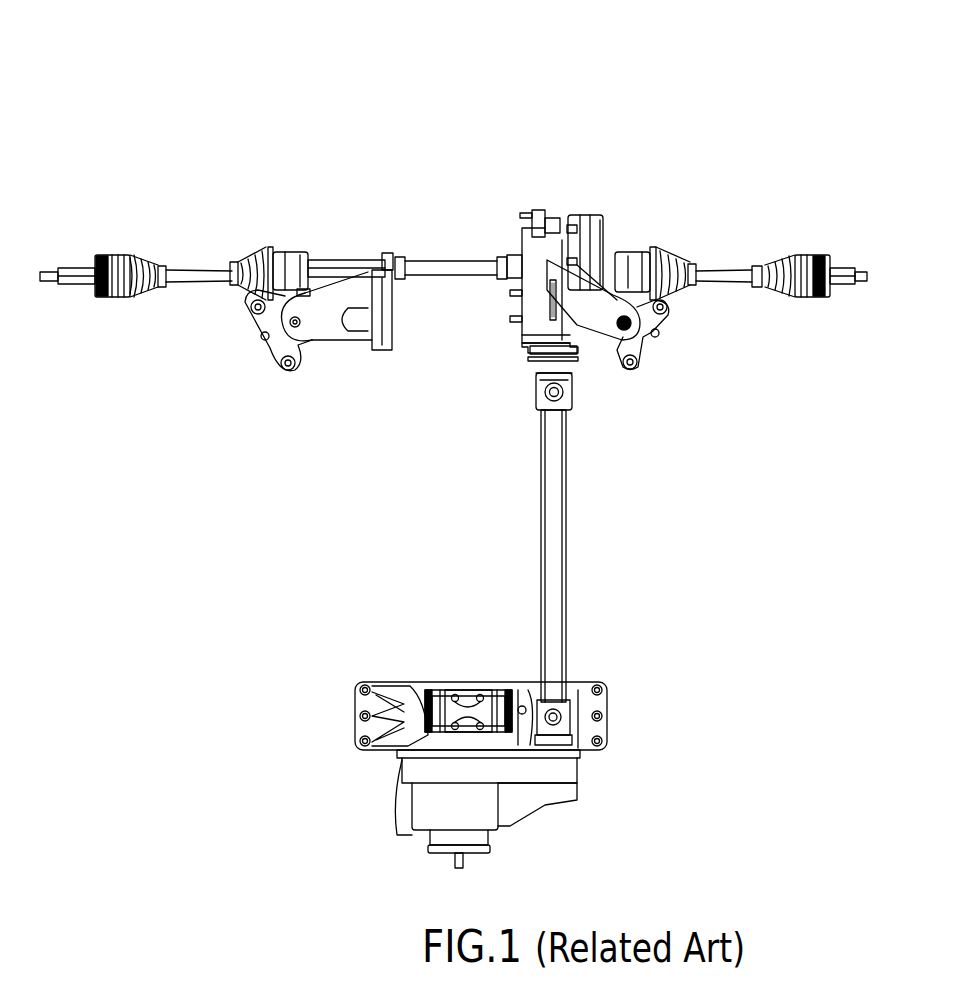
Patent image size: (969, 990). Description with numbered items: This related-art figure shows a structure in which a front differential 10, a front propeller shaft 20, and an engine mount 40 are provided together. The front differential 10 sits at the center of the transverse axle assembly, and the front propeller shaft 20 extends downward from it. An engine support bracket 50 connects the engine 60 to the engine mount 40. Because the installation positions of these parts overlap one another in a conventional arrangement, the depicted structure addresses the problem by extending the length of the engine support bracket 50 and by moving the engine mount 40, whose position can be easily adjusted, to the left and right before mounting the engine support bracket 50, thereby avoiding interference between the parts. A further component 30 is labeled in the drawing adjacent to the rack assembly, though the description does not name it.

The front differential 10 is at (601, 228).
The front propeller shaft 20 is at (558, 588).
The rack housing 30 is at (422, 270).
The engine mount 40 is at (668, 320).
The engine support bracket 50 is at (588, 325).
The engine 60 is at (498, 218).